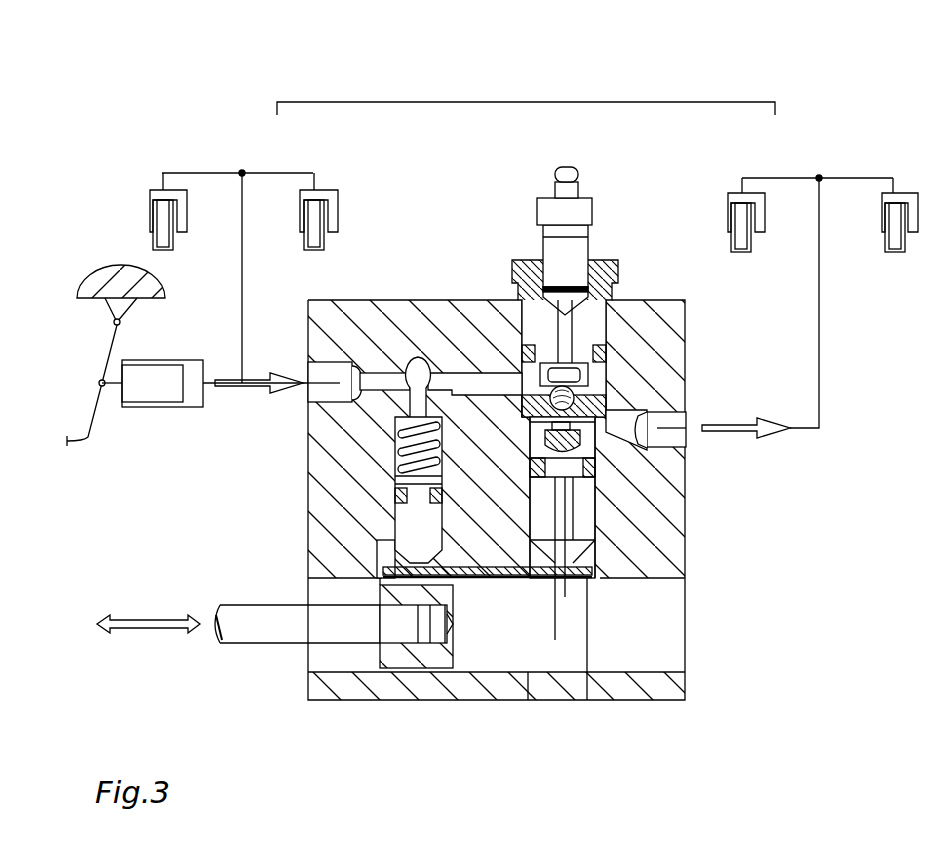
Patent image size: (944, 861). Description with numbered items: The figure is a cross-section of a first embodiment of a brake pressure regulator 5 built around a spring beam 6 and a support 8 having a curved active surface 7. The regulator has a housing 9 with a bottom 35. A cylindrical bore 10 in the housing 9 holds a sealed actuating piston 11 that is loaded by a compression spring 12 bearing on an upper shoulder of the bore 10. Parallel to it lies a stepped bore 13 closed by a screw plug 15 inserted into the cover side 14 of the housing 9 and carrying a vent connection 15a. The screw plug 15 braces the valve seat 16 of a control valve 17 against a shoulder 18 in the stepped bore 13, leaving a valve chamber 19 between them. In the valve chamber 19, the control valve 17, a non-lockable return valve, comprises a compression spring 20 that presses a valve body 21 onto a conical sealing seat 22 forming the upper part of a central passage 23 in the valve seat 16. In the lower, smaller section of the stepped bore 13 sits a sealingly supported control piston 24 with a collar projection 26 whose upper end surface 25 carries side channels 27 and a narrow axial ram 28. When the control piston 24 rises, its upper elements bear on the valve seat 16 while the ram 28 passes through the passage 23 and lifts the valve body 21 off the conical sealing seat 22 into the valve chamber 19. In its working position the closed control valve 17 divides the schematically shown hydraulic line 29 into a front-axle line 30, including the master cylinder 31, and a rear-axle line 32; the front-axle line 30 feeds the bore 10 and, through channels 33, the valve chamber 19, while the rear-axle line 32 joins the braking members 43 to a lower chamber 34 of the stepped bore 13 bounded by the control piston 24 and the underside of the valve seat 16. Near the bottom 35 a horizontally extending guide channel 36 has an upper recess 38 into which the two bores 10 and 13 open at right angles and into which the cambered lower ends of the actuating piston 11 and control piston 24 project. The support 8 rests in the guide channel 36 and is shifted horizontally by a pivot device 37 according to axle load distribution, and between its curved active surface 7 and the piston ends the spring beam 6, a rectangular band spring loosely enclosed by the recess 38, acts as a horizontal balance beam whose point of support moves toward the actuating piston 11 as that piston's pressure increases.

The brake pressure regulator 5 is at (403, 290).
The spring beam 6 is at (449, 640).
The curved active surface 7 is at (400, 700).
The support 8 is at (500, 640).
The housing 9 is at (330, 313).
The cylindrical bore 10 is at (395, 432).
The actuating piston 11 is at (410, 527).
The compression spring 12 is at (395, 455).
The stepped bore 13 is at (505, 480).
The cover side 14 is at (663, 300).
The screw plug 15 is at (615, 273).
The vent connection 15a is at (580, 192).
The valve seat 16 is at (606, 402).
The control valve 17 is at (607, 393).
The shoulder 18 is at (656, 452).
The valve chamber 19 is at (607, 380).
The compression spring 20 is at (565, 167).
The valve body 21 is at (453, 395).
The conical sealing seat 22 is at (660, 433).
The passage 23 is at (552, 408).
The control piston 24 is at (587, 528).
The upper end surface 25 is at (538, 477).
The collar projection 26 is at (640, 550).
The side channels 27 is at (555, 640).
The ram 28 is at (565, 597).
The hydraulic line 29 is at (535, 102).
The front-axle line 30 is at (277, 168).
The master cylinder 31 is at (193, 373).
The rear-axle line 32 is at (775, 172).
The channels 33 is at (500, 373).
The lower chamber 34 is at (600, 496).
The bottom 35 is at (608, 690).
The guide channel 36 is at (648, 655).
The pivot device 37 is at (351, 700).
The upper recess 38 is at (382, 557).
The braking members 43 is at (907, 192).